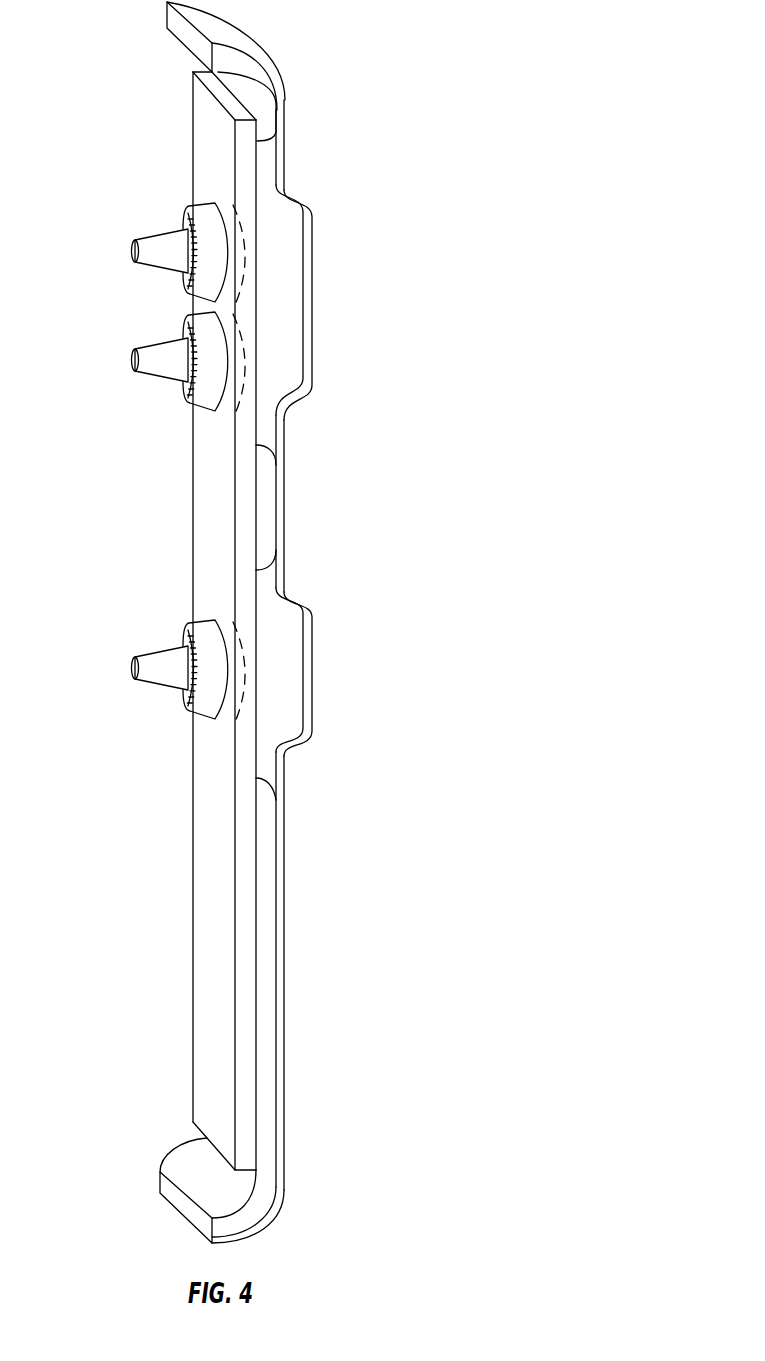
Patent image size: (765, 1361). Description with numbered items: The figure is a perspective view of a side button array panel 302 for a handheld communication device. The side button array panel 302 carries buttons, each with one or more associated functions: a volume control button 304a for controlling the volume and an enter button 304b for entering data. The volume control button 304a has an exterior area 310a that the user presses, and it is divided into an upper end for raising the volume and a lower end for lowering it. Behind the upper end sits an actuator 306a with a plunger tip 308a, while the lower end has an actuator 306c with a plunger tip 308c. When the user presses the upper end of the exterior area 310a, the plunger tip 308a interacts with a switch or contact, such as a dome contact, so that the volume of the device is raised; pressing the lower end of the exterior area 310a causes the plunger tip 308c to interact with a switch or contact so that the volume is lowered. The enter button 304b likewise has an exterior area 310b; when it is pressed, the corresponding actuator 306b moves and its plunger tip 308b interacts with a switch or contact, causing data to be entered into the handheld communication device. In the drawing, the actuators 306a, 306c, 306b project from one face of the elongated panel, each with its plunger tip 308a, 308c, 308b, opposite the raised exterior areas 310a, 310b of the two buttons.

The side button array panel 302 is at (338, 64).
The volume control button 304a is at (350, 293).
The enter button 304b is at (350, 646).
The actuator 306a is at (187, 208).
The actuator 306b is at (190, 627).
The actuator 306c is at (188, 405).
The plunger tip 308a is at (158, 233).
The plunger tip 308b is at (160, 652).
The plunger tip 308c is at (163, 380).
The exterior area 310a is at (313, 295).
The exterior area 310b is at (313, 665).